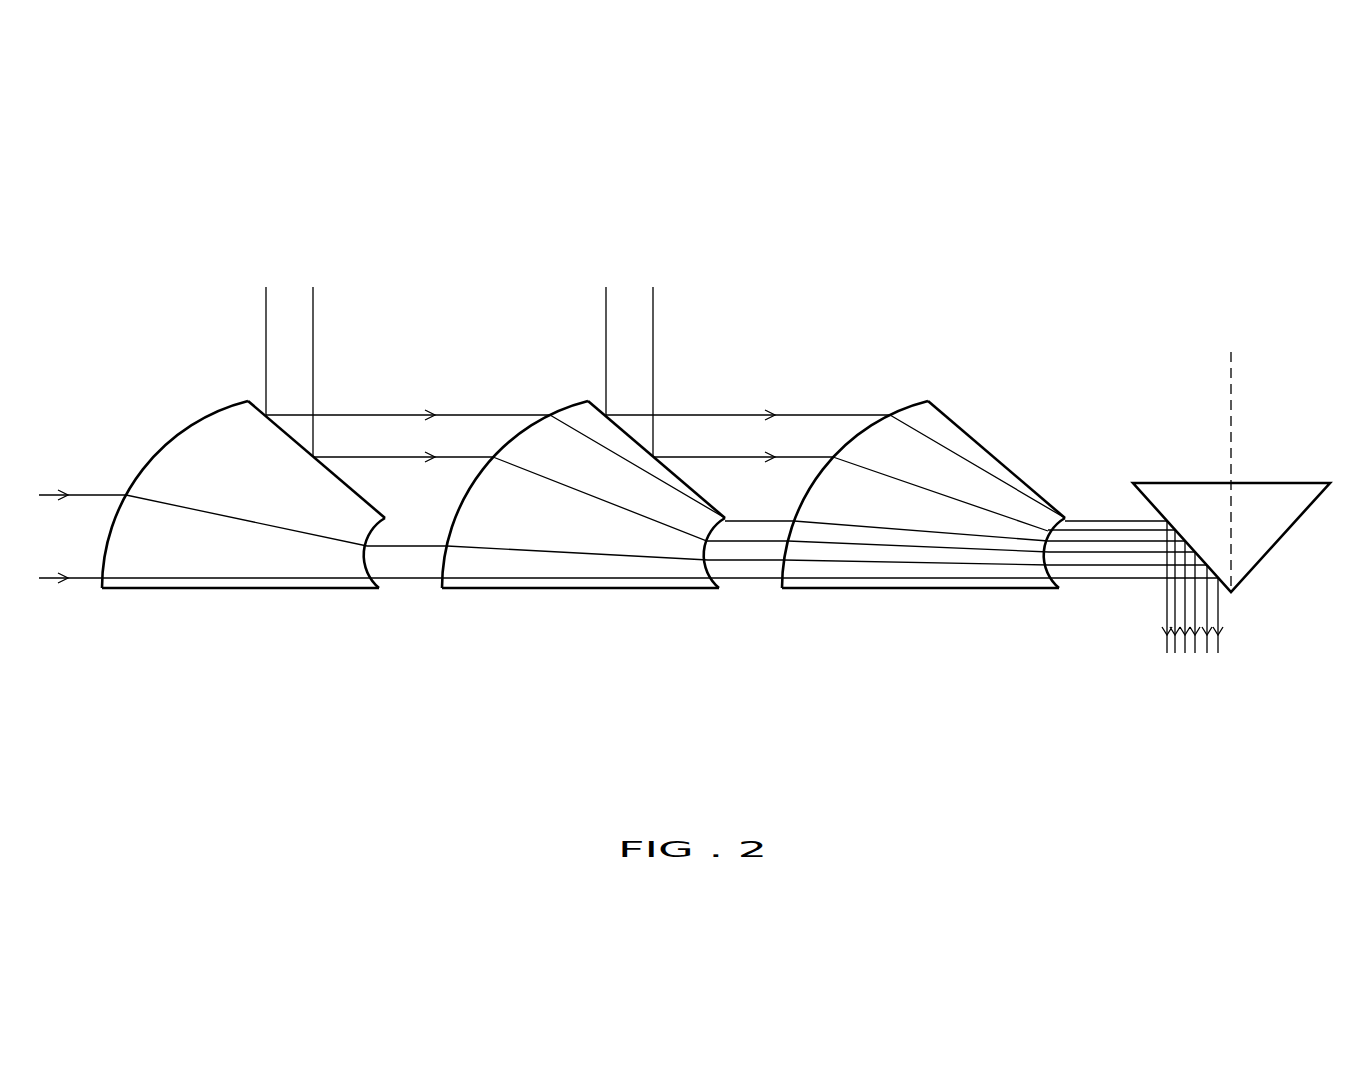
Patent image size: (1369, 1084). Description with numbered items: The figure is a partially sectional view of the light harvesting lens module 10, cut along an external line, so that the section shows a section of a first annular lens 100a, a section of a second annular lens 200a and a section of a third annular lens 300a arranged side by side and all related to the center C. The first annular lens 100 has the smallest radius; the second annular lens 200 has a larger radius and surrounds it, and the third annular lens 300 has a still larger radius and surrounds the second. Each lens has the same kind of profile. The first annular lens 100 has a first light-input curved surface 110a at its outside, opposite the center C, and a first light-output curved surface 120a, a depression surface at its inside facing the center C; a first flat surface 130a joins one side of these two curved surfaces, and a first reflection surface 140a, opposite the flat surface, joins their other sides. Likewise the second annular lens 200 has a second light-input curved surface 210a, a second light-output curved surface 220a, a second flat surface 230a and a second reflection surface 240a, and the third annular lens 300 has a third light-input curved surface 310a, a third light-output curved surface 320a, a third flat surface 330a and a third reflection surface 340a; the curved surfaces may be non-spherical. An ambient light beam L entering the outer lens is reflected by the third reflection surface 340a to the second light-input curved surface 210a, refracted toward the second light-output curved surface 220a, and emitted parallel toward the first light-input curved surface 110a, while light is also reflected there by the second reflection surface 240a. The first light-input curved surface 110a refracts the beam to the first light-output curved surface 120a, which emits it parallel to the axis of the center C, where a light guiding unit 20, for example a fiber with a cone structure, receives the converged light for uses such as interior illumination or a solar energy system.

The light harvesting lens module 10 is at (1127, 250).
The light guiding unit 20 is at (1155, 483).
The first annular lens 100 is at (939, 484).
The section of the first annular lens 100a is at (939, 484).
The first light-input curved surface 110a is at (844, 484).
The first light-output curved surface 120a is at (1081, 583).
The first flat surface 130a is at (920, 618).
The first reflection surface 140a is at (996, 440).
The second annular lens 200 is at (586, 484).
The section of the second annular lens 200a is at (586, 484).
The second light-input curved surface 210a is at (504, 524).
The second light-output curved surface 220a is at (724, 583).
The second flat surface 230a is at (580, 618).
The second reflection surface 240a is at (636, 419).
The third annular lens 300 is at (257, 484).
The section of the third annular lens 300a is at (210, 445).
The third light-input curved surface 310a is at (148, 460).
The third light-output curved surface 320a is at (379, 590).
The third flat surface 330a is at (195, 590).
The third reflection surface 340a is at (255, 398).
The light beam L is at (62, 492).
The center C is at (1230, 459).